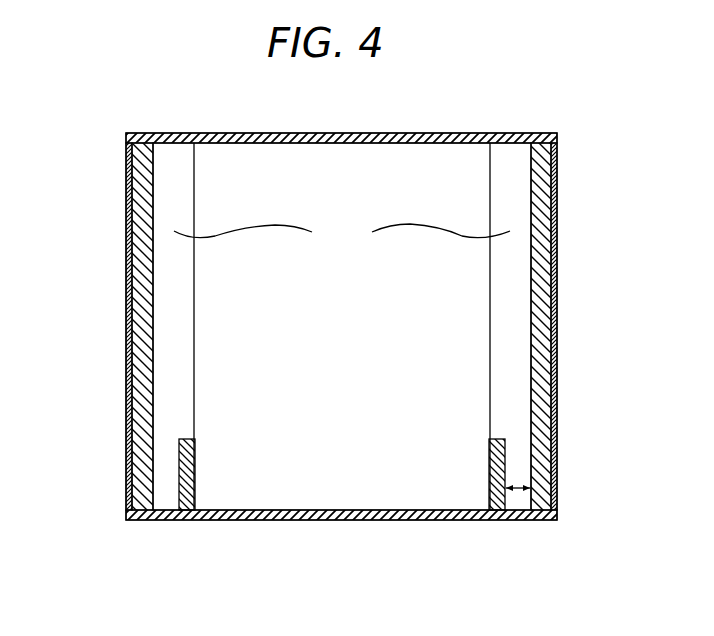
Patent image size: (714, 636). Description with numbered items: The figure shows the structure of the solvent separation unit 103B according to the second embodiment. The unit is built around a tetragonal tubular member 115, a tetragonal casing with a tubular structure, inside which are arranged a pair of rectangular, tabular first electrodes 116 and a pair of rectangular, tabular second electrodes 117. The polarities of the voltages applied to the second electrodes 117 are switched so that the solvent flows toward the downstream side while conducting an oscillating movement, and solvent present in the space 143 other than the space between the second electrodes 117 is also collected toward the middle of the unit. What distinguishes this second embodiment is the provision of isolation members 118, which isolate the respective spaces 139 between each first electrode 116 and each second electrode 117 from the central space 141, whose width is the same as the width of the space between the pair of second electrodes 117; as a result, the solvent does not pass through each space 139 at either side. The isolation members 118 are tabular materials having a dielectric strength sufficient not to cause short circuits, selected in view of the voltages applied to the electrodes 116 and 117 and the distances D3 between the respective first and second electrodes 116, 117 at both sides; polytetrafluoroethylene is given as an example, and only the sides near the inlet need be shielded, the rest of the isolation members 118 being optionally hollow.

The solvent separation unit 103B is at (119, 117).
The tetragonal tubular member 115 is at (558, 282).
The first electrodes 116 is at (129, 336).
The second electrodes 117 is at (196, 453).
The isolation members 118 is at (342, 234).
The spaces between the first electrodes and the second electrodes 139 is at (165, 165).
The space having the same width as the space between the second electrodes 141 is at (404, 165).
The space other than the space between the second electrodes 143 is at (520, 196).
The distances between the first and second electrodes D3 is at (518, 487).